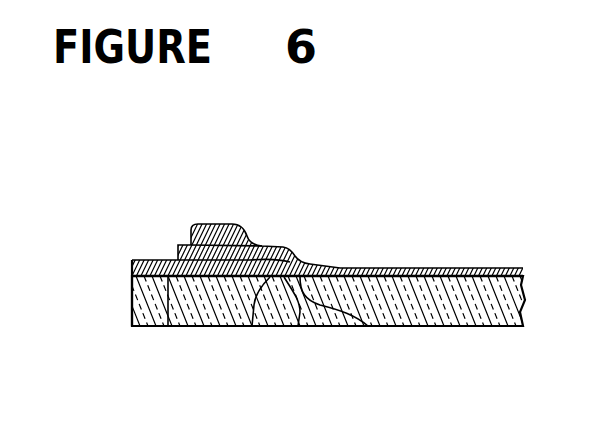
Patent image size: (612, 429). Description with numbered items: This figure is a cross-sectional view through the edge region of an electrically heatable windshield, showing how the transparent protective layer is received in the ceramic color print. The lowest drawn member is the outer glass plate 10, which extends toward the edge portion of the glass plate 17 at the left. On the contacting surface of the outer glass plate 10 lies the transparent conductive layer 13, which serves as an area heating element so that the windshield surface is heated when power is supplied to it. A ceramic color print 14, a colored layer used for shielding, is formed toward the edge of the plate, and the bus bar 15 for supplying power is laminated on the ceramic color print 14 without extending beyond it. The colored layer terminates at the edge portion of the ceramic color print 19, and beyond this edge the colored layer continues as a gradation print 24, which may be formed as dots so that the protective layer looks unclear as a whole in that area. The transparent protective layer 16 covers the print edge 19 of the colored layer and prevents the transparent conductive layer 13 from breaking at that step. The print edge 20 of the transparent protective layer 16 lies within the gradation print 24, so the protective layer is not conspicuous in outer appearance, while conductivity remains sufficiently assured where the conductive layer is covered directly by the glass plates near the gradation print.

The outer glass plate 10 is at (463, 303).
The transparent conductive layer 13 is at (428, 268).
The ceramic color print 14 is at (167, 327).
The bus bar 15 is at (178, 253).
The transparent protective layer 16 is at (245, 241).
The edge portion of the glass plate 17 is at (131, 293).
The edge portion of the ceramic color print 19 is at (252, 326).
The print edge of the transparent protective layer 20 is at (368, 326).
The gradation print 24 is at (298, 326).